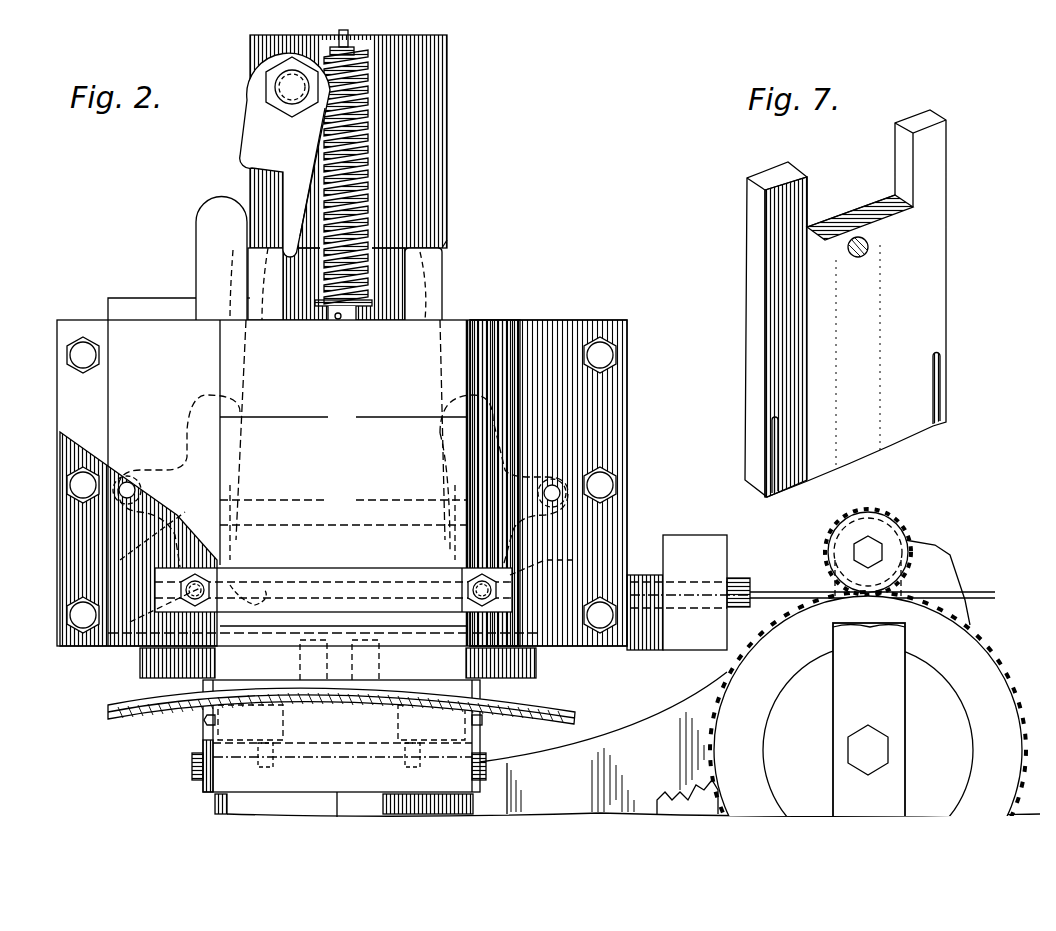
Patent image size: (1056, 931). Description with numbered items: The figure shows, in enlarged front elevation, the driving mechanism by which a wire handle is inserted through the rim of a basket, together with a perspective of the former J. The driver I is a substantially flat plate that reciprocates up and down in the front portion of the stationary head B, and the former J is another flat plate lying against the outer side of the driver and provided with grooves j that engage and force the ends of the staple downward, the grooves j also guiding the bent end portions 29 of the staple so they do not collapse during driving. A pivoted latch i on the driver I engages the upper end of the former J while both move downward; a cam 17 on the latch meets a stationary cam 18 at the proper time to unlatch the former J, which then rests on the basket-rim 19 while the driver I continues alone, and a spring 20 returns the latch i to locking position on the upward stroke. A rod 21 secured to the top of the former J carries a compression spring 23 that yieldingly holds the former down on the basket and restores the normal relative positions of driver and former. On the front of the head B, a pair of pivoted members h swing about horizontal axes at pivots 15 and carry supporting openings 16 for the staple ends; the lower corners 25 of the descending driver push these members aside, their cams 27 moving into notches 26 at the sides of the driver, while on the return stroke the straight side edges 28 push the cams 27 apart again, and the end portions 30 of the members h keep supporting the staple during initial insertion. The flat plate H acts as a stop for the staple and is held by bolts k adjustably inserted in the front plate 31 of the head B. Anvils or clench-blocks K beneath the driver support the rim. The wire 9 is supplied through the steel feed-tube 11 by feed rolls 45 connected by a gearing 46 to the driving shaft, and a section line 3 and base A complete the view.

In FIG. 2, the section line 3 is at (353, 36).
In FIG. 2, the driver I is at (412, 130).
In FIG. 2, the pivoted latch i is at (273, 137).
In FIG. 2, the cam 17 is at (246, 158).
In FIG. 2, the stationary cam 18 is at (222, 220).
In FIG. 2, the spring 20 is at (281, 284).
In FIG. 2, the rod 21 is at (355, 52).
In FIG. 2, the compression spring 23 is at (372, 173).
In FIG. 2, the lower corners 25 is at (246, 478).
In FIG. 2, the notches 26 is at (250, 243).
In FIG. 2, the former J is at (440, 266).
In FIG. 7, the former J is at (910, 313).
In FIG. 7, the grooves j is at (940, 400).
In FIG. 2, the head B is at (532, 336).
In FIG. 2, the cams 27 is at (192, 422).
In FIG. 2, the straight side edges 28 is at (246, 406).
In FIG. 2, the pivots 15 is at (129, 481).
In FIG. 2, the end portions of the staple 29 is at (245, 570).
In FIG. 2, the flat plate H is at (333, 590).
In FIG. 2, the pivoted members h is at (540, 545).
In FIG. 2, the bolts k is at (196, 574).
In FIG. 2, the supporting openings 16 is at (136, 652).
In FIG. 2, the end portions of the members 30 is at (413, 652).
In FIG. 2, the front plate 31 is at (545, 630).
In FIG. 2, the basket-rim 19 is at (520, 700).
In FIG. 2, the anvils or clench-blocks K is at (203, 738).
In FIG. 2, the base A is at (215, 805).
In FIG. 2, the steel feed-tube 11 is at (735, 581).
In FIG. 2, the wire 9 is at (770, 594).
In FIG. 2, the feed rolls 45 is at (892, 603).
In FIG. 2, the gearing 46 is at (988, 672).